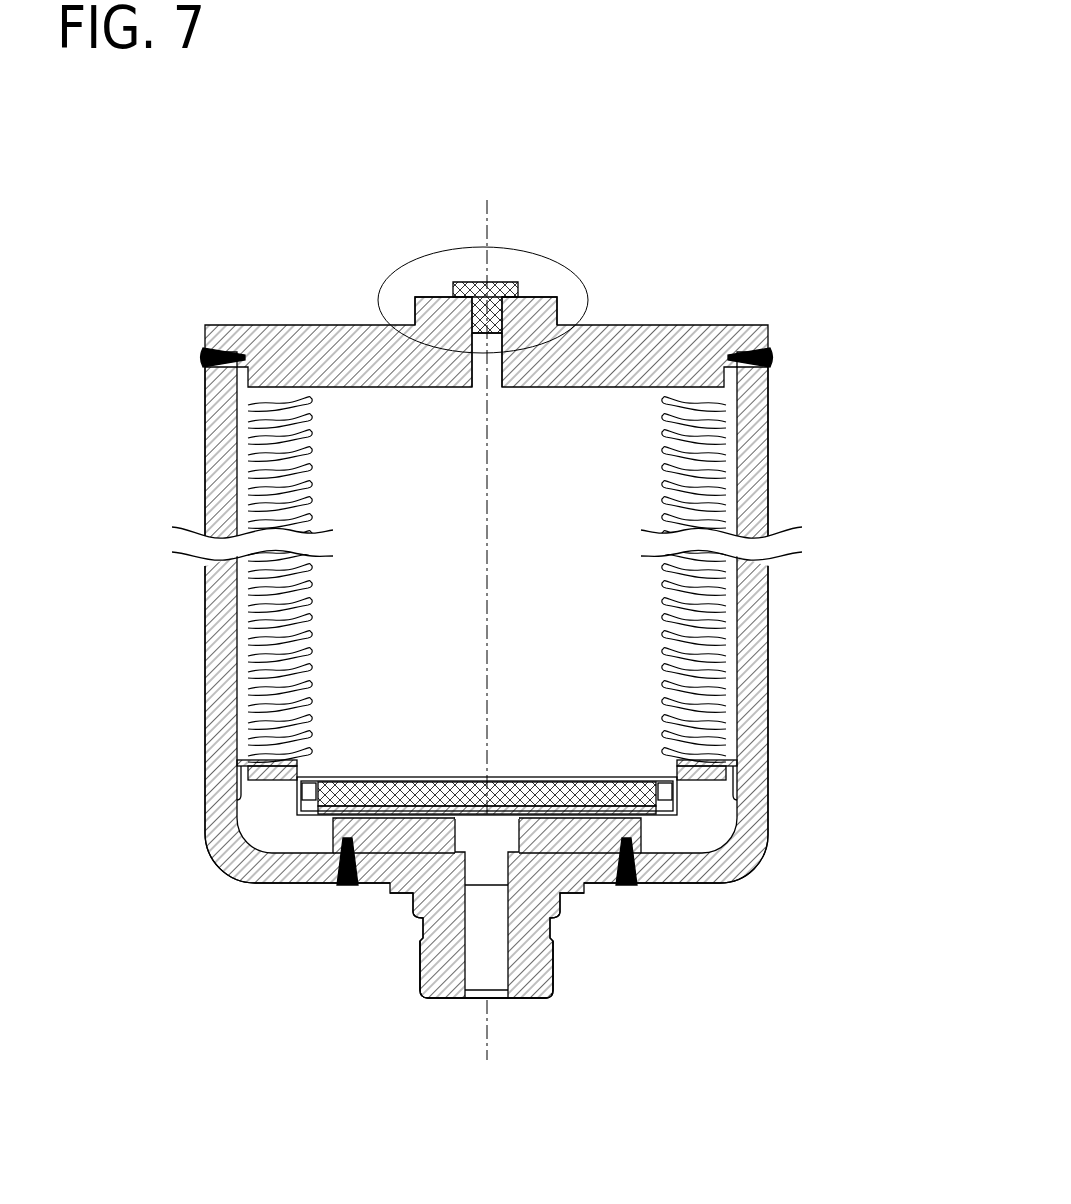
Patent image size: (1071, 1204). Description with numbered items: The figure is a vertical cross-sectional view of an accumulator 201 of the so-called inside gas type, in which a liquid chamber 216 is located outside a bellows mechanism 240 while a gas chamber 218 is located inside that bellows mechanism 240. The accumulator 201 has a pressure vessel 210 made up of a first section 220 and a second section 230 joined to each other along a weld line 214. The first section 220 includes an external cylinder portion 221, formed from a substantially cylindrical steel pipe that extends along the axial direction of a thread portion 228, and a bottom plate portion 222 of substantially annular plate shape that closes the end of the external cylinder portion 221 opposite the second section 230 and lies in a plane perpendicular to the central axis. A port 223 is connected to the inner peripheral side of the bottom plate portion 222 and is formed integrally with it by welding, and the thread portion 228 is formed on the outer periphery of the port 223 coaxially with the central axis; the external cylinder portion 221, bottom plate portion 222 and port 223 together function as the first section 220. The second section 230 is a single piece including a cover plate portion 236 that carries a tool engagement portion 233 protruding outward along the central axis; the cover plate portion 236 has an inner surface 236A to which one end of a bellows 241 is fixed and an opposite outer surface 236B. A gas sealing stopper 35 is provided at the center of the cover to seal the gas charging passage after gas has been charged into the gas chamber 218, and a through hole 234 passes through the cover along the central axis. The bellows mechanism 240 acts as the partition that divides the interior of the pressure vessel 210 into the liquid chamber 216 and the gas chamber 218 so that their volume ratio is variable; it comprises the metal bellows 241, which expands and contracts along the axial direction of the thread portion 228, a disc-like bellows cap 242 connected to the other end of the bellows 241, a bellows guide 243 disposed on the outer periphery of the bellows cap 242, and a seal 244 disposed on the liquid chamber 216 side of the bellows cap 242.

The accumulator 201 is at (532, 52).
The pressure vessel 210 is at (898, 198).
The weld line 214 is at (200, 358).
The liquid chamber 216 is at (277, 845).
The gas chamber 218 is at (345, 455).
The first section 220 is at (827, 770).
The external cylinder portion 221 is at (768, 790).
The bottom plate portion 222 is at (730, 883).
The port 223 is at (525, 999).
The thread portion 228 is at (560, 937).
The second section 230 is at (835, 163).
The tool engagement portion 233 is at (585, 250).
The through hole 234 is at (488, 388).
The cover plate portion 236 is at (765, 223).
The inner surface 236A is at (595, 348).
The outer surface 236B is at (597, 325).
The gas sealing stopper 35 is at (525, 282).
The bellows mechanism 240 is at (136, 653).
The bellows 241 is at (255, 650).
The bellows cap 242 is at (268, 742).
The bellows guide 243 is at (388, 776).
The seal 244 is at (330, 812).